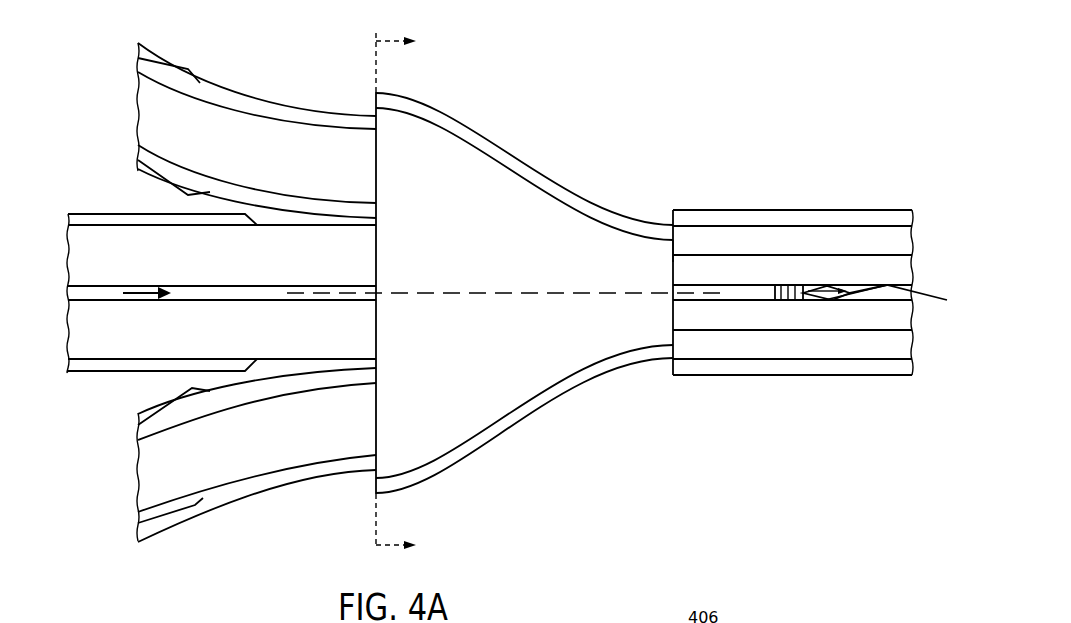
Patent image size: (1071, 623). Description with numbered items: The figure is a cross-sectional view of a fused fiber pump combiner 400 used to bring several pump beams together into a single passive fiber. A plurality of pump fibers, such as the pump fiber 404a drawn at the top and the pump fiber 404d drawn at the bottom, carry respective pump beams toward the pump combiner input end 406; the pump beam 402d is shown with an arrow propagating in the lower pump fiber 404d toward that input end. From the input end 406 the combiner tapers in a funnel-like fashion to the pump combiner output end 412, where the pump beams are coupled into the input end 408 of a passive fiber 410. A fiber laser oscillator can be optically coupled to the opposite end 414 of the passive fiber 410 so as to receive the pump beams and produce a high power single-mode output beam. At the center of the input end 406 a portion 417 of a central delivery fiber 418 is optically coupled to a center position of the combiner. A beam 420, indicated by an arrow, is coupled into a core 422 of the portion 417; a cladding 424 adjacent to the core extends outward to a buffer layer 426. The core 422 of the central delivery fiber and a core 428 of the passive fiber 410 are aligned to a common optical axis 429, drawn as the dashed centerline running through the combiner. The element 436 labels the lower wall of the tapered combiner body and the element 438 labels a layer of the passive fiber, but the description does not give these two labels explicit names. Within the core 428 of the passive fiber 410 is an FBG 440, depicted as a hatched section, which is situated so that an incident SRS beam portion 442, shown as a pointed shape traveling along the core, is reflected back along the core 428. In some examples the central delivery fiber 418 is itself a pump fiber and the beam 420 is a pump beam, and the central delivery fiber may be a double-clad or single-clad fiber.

The fused fiber pump combiner 400 is at (650, 89).
The pump beam 402d is at (160, 479).
The pump fiber 404a is at (138, 80).
The pump fiber 404d is at (137, 508).
The pump combiner input end 406 is at (374, 98).
The input end of passive fiber 408 is at (670, 258).
The passive fiber 410 is at (840, 210).
The pump combiner output end 412 is at (671, 260).
The opposite end of passive fiber 414 is at (928, 235).
The portion of central delivery fiber 417 is at (68, 353).
The central delivery fiber 418 is at (72, 250).
The beam 420 is at (133, 295).
The core 422 is at (267, 293).
The cladding 424 is at (157, 248).
The buffer layer 426 is at (220, 217).
The core of passive fiber 428 is at (755, 292).
The common optical axis 429 is at (423, 288).
The lower funnel wall 436 is at (578, 293).
The housing channel lower wall 438 is at (788, 317).
The FBG 440 is at (793, 292).
The SRS beam portion 442 is at (823, 298).